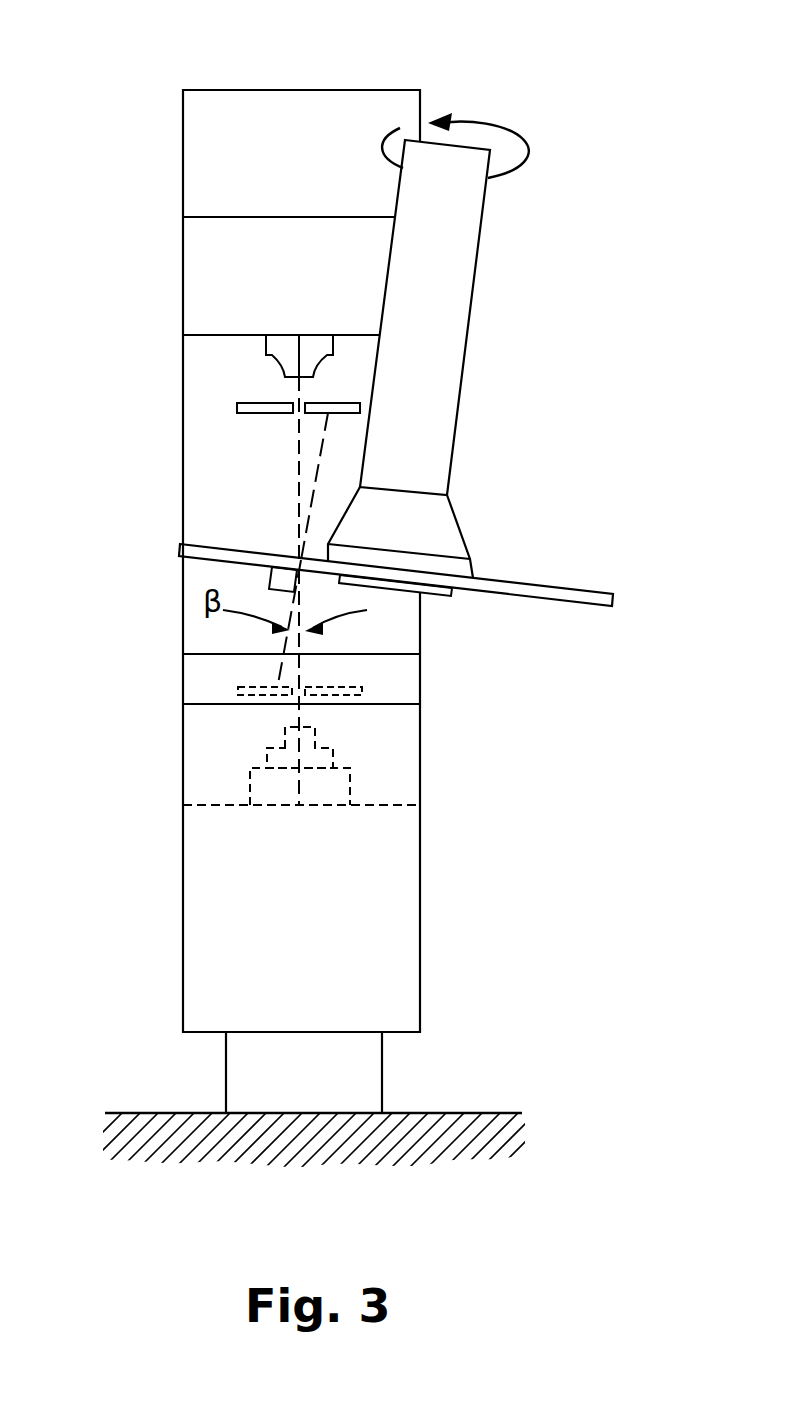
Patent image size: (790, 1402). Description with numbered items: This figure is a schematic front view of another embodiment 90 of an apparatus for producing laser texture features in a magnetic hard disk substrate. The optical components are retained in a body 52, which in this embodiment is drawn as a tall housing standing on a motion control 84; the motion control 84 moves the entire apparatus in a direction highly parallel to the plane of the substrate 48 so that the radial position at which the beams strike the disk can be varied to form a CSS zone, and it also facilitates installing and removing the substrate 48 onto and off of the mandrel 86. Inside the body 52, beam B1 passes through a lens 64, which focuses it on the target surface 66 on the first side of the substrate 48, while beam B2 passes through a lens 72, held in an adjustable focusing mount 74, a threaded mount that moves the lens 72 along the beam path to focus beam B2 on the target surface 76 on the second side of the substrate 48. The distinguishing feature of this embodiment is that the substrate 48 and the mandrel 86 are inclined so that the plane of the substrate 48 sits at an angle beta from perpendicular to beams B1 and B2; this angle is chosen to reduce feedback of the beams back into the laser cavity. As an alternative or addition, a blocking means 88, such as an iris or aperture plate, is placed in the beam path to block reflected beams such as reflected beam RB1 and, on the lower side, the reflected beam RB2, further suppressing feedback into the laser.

The embodiment 90 is at (198, 62).
The body 52 is at (182, 188).
The lens 64 is at (287, 368).
The blocking means 88 is at (237, 408).
The beam B1 is at (292, 445).
The reflected beam RB1 is at (314, 477).
The reflected beam lower portion RB2 is at (278, 643).
The mandrel 86 is at (463, 522).
The substrate 48 is at (617, 600).
The target surface 66 is at (518, 582).
The target surface 76 is at (522, 595).
The beam B2 is at (302, 716).
The lens 72 is at (283, 732).
The adjustable focusing mount 74 is at (252, 775).
The motion control 84 is at (383, 1072).